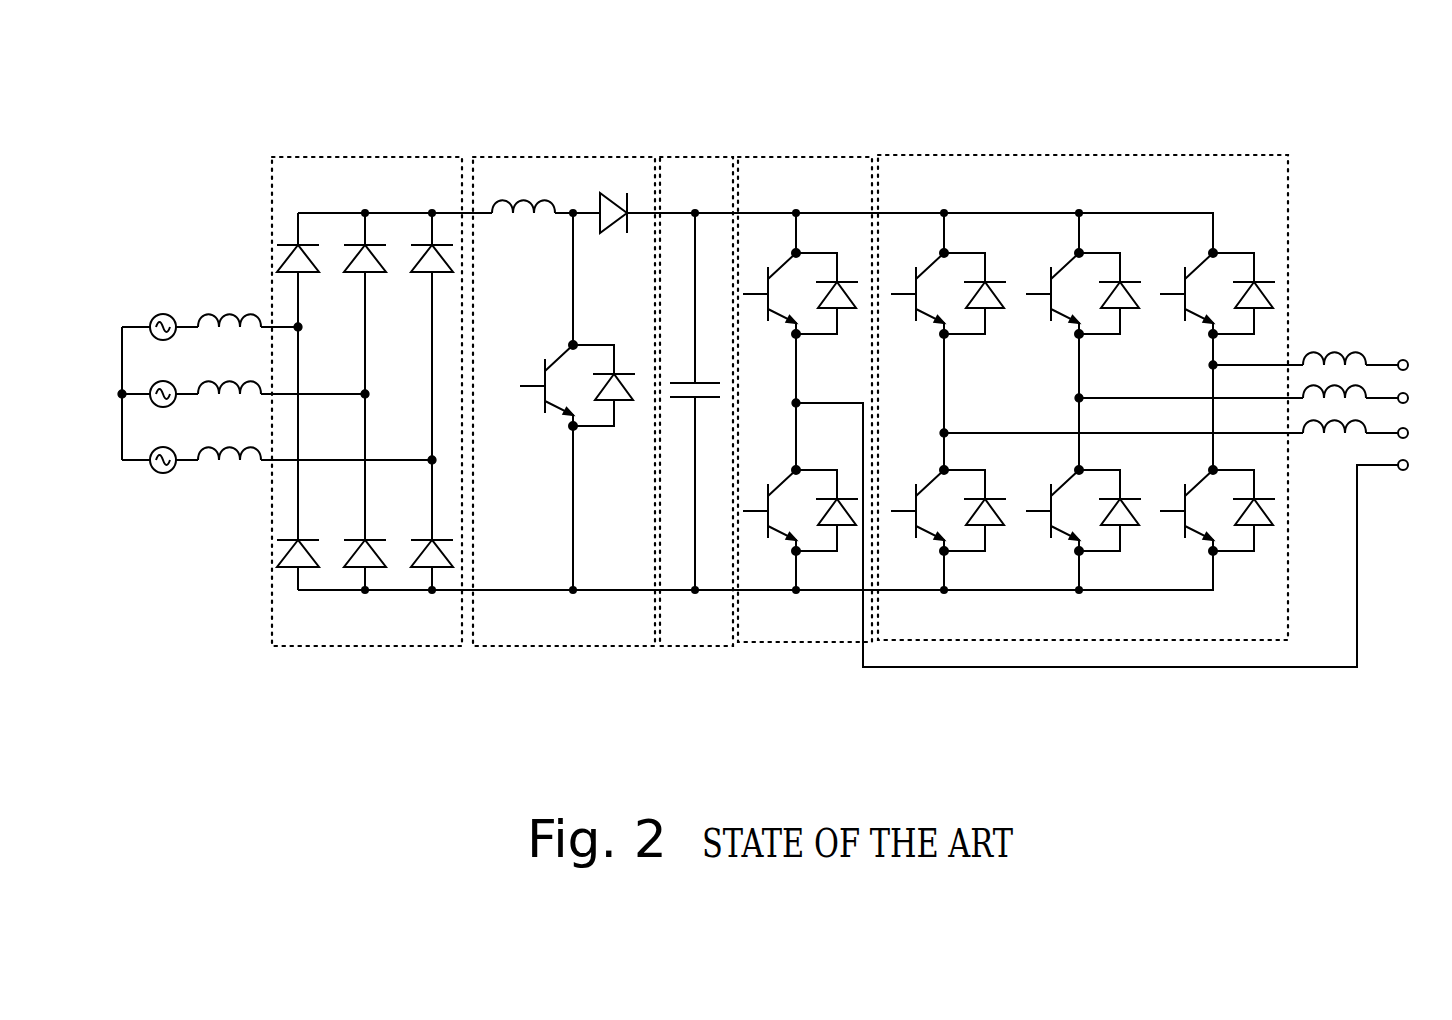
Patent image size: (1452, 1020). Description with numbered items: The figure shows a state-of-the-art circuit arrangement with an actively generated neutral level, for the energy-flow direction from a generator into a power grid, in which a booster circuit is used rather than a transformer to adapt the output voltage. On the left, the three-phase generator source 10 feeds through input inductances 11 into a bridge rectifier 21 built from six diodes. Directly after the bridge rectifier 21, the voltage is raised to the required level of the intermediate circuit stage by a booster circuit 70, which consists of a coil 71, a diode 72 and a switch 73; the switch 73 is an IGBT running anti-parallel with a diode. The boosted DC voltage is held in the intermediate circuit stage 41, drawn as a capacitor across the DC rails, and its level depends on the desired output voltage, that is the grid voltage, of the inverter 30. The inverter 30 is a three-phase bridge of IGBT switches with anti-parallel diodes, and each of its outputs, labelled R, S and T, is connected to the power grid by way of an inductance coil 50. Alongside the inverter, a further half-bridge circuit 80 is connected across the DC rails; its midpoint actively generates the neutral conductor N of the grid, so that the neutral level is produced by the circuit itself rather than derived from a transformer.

The AC power source 10 is at (163, 292).
The input inductor 11 is at (236, 292).
The bridge rectifier 21 is at (404, 155).
The inverter 30 is at (1019, 153).
The intermediate circuit stage 41 is at (701, 155).
The inductance coil 50 is at (1350, 328).
The booster circuit 70 is at (564, 354).
The coil 71 is at (557, 190).
The diode 72 is at (619, 188).
The switch 73 is at (555, 442).
The further half-bridge circuit 80 is at (809, 155).